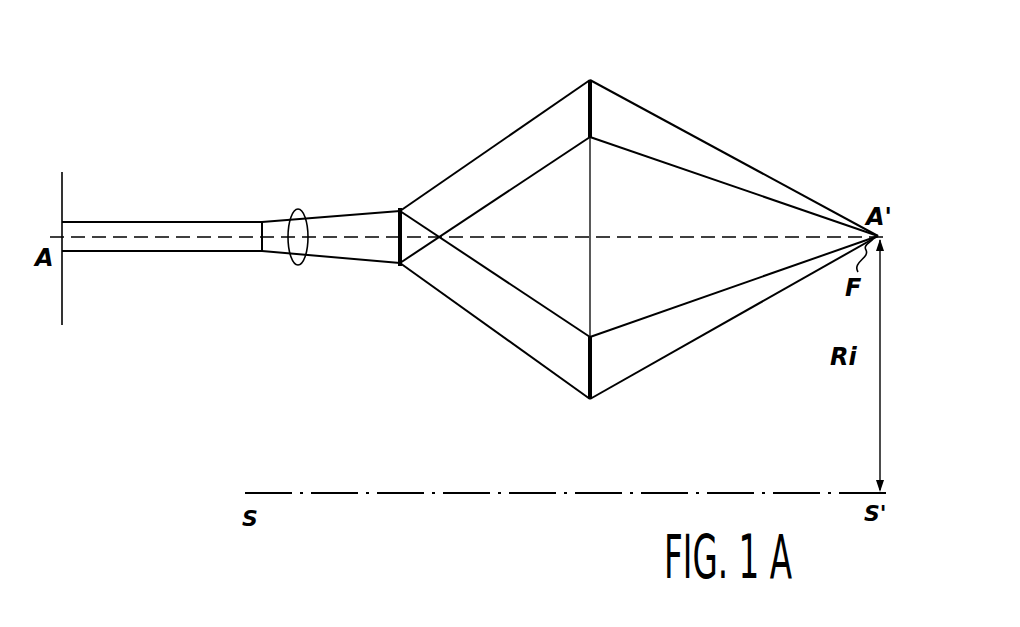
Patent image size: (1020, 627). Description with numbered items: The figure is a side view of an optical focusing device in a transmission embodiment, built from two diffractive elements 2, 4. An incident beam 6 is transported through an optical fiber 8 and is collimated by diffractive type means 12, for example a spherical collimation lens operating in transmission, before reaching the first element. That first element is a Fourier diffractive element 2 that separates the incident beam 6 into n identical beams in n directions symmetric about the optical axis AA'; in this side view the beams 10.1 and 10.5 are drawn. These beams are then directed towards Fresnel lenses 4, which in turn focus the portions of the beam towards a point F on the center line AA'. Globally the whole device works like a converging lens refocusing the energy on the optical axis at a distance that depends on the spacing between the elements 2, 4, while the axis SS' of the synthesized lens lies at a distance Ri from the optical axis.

The Fourier diffractive element 2 is at (401, 212).
The Fresnel lens element 4 is at (598, 92).
The incident beam 6 is at (350, 258).
The optical fiber 8 is at (153, 252).
The diffractive collimation means 12 is at (297, 214).
The first beam 10.1 is at (505, 152).
The fifth beam 10.5 is at (517, 344).